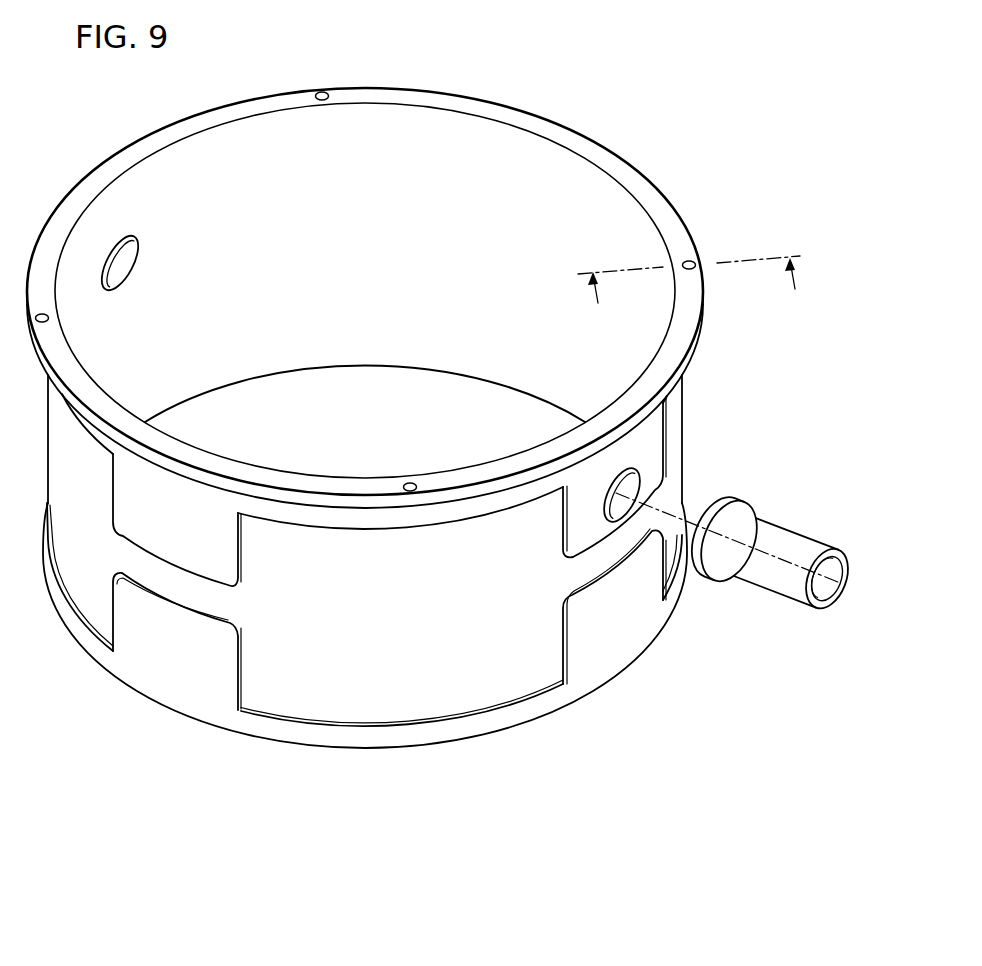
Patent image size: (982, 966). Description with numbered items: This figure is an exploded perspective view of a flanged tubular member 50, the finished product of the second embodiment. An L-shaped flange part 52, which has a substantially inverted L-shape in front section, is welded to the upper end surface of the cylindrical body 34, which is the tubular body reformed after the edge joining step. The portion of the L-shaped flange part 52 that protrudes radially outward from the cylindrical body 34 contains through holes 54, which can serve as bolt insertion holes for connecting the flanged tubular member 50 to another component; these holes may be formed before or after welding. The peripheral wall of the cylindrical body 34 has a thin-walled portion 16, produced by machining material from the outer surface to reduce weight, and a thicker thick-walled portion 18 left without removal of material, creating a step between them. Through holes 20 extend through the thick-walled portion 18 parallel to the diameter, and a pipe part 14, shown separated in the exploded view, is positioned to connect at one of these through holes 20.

The flanged tubular member 50 is at (677, 92).
The L-shaped flange part 52 is at (642, 185).
The through holes 54 is at (322, 101).
The through holes 20 is at (126, 272).
The cylindrical body 34 is at (702, 425).
The thick-walled portion 18 is at (603, 655).
The thin-walled portion 16 is at (470, 690).
The pipe part 14 is at (782, 548).